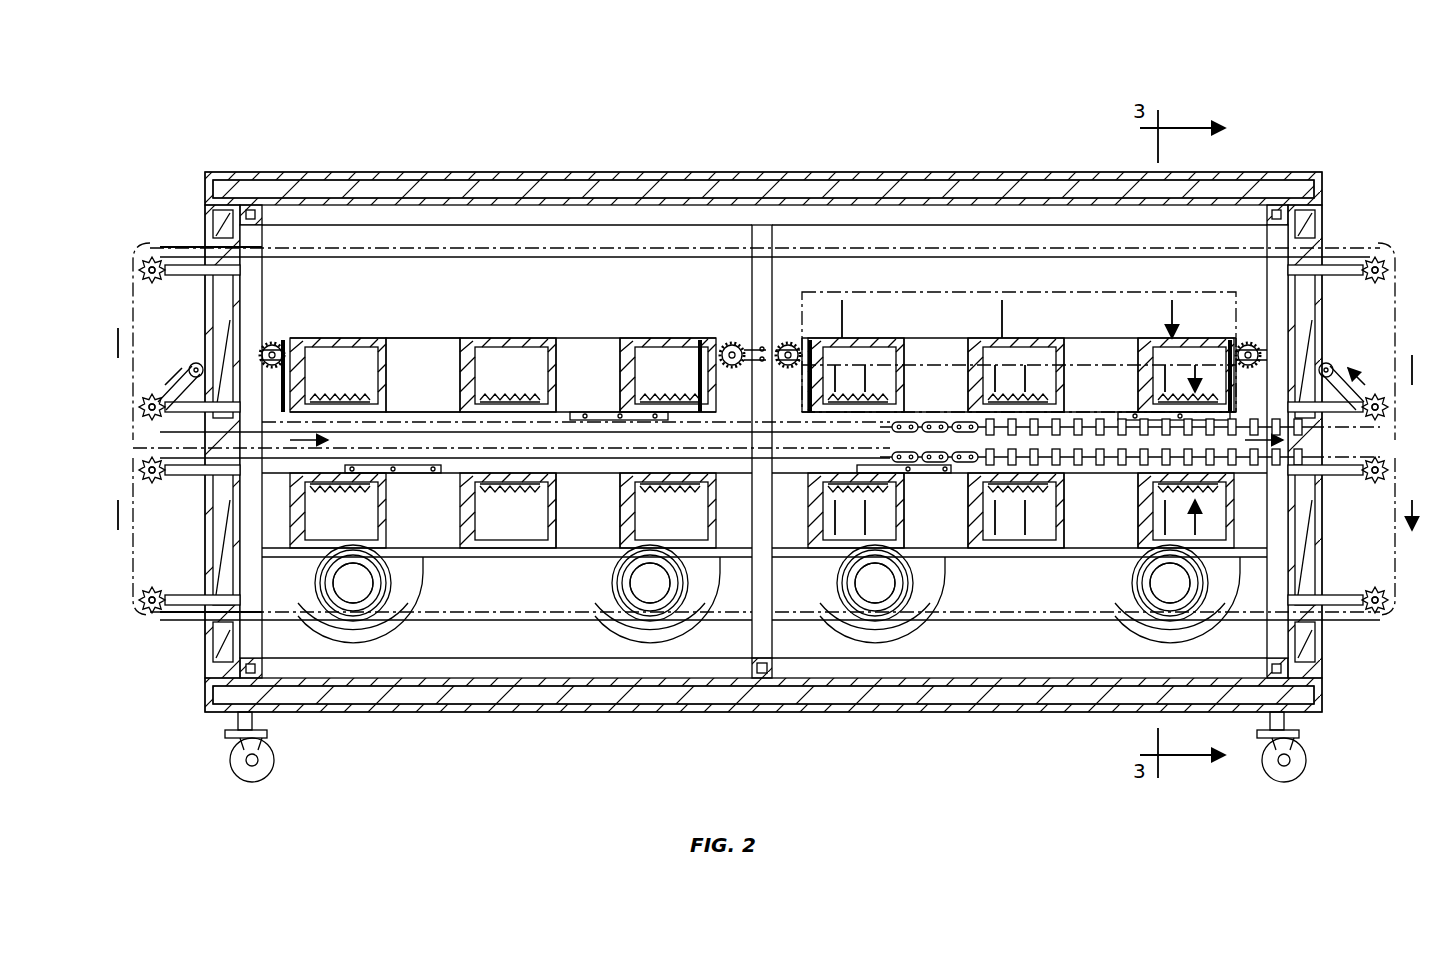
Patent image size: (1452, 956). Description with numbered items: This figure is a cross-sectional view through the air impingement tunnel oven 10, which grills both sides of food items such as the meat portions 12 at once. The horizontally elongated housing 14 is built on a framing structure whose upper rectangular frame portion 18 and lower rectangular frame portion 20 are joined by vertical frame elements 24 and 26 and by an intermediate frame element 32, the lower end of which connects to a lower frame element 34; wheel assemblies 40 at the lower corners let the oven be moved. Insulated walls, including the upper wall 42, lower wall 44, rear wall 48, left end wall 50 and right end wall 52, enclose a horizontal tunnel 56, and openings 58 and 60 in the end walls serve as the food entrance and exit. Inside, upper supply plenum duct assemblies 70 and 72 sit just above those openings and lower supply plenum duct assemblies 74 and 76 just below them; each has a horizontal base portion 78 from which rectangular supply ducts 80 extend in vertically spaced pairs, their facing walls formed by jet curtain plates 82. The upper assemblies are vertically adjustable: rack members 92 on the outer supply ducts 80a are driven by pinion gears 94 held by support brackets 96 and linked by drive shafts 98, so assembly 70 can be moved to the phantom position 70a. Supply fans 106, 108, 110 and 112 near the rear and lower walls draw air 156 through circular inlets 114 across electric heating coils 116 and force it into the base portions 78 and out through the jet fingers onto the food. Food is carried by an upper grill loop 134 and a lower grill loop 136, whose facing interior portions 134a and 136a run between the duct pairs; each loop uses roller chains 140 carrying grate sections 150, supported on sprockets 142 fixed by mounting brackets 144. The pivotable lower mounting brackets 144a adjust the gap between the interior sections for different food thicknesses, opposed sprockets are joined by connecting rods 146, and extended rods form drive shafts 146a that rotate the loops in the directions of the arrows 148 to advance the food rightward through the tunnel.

The air impingement tunnel oven 10 is at (688, 128).
The meat portions 12 is at (1080, 420).
The housing 14 is at (204, 172).
The upper rectangular frame portion 18 is at (855, 200).
The lower rectangular frame portion 20 is at (880, 680).
The vertically extending frame element 24 is at (1266, 275).
The vertically extending frame element 26 is at (262, 275).
The intermediate frame element 32 is at (773, 597).
The lower frame element 34 is at (768, 680).
The wheel assemblies 40 is at (268, 778).
The upper wall 42 is at (960, 180).
The lower wall 44 is at (970, 705).
The rear wall 48 is at (503, 338).
The left end wall 50 is at (212, 312).
The right end wall 52 is at (1300, 325).
The tunnel 56 is at (605, 285).
The entrance opening 58 is at (208, 437).
The exit opening 60 is at (1345, 440).
The upper supply plenum duct assembly 70 is at (1112, 336).
The phantom line position of upper duct assembly 70a is at (885, 292).
The upper supply plenum duct assembly 72 is at (440, 337).
The lower supply plenum duct assembly 74 is at (963, 558).
The lower supply plenum duct assembly 76 is at (443, 558).
The base portion 78 is at (592, 337).
The supply ducts 80 is at (494, 338).
The outer supply ducts 80a is at (340, 338).
The jet curtain plates 82 is at (348, 395).
The rack members 92 is at (290, 340).
The pinion gears 94 is at (272, 343).
The support brackets 96 is at (276, 366).
The drive shafts 98 is at (262, 352).
The supply fan 106 is at (1150, 648).
The supply fan 108 is at (610, 645).
The supply fan 110 is at (860, 645).
The supply fan 112 is at (378, 648).
The circular inlet 114 is at (372, 598).
The electric heating coil 116 is at (345, 605).
The upper grill loop 134 is at (182, 242).
The interior portion of upper grill loop 134a is at (448, 422).
The lower grill loop 136 is at (187, 622).
The interior portion of lower grill loop 136a is at (458, 455).
The roller chain 140 is at (1395, 285).
The sprockets 142 is at (142, 268).
The mounting brackets 144 is at (166, 272).
The lower mounting brackets 144a is at (160, 372).
The connecting rods 146 is at (148, 400).
The drive shafts 146a is at (152, 262).
The arrows 148 is at (1420, 528).
The grate sections 150 is at (1090, 420).
The air 156 is at (870, 375).